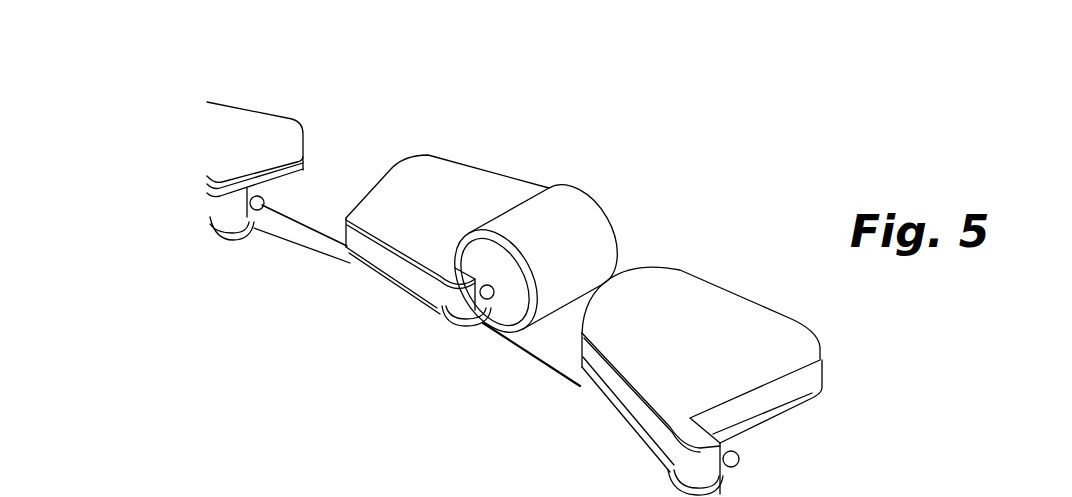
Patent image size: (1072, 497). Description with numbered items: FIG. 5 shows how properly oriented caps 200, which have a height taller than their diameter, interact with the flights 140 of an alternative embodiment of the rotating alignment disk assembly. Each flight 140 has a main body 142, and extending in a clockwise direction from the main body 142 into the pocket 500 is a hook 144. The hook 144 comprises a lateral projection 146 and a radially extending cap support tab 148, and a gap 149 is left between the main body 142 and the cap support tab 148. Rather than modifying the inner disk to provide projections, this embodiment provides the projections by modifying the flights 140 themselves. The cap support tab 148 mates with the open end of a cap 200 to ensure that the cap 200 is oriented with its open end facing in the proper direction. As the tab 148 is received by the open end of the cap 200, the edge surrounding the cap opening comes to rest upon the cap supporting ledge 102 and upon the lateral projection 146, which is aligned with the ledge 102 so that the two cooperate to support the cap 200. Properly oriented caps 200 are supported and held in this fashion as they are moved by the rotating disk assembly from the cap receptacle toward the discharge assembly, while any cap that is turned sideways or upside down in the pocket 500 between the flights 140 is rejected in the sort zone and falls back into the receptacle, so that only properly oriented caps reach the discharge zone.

The cap supporting ledge 102 is at (308, 247).
The flight 140 is at (649, 295).
The main body 142 is at (583, 303).
The hook 144 is at (448, 335).
The lateral projection 146 is at (220, 218).
The cap support tab 148 is at (258, 207).
The gap 149 is at (722, 431).
The cap 200 is at (560, 211).
The pocket 500 is at (307, 207).